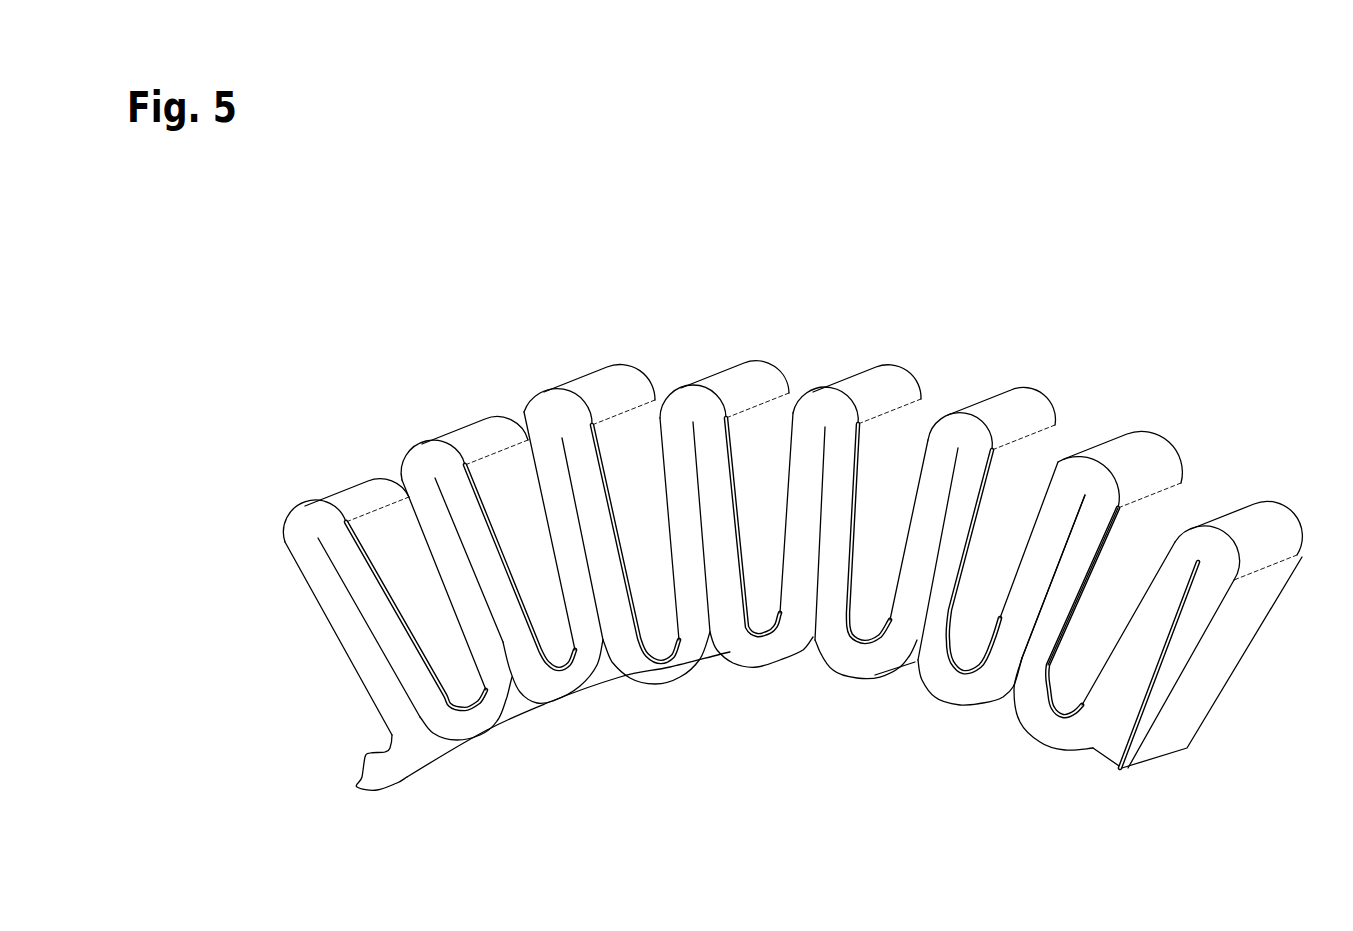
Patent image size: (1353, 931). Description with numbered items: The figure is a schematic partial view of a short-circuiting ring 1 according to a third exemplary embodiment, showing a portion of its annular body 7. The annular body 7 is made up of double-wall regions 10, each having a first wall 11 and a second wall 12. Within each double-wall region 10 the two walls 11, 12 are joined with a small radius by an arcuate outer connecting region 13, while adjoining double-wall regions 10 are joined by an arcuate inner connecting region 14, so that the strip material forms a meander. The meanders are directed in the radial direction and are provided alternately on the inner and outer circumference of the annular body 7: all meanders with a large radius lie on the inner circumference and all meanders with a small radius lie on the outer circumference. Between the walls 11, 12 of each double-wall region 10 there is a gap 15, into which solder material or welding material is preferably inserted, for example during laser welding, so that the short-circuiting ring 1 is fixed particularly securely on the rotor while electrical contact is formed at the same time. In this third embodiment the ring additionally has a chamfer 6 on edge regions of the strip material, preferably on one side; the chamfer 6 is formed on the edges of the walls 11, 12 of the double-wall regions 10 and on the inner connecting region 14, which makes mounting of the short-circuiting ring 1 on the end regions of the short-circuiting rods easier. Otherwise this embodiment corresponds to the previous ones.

The short-circuiting ring 1 is at (792, 542).
The chamfer 6 is at (633, 587).
The annular body 7 is at (718, 368).
The double-wall region 10 is at (1122, 511).
The first wall 11 is at (1042, 556).
The second wall 12 is at (1087, 526).
The outer connecting region 13 is at (875, 393).
The inner connecting region 14 is at (957, 682).
The gap 15 is at (503, 640).